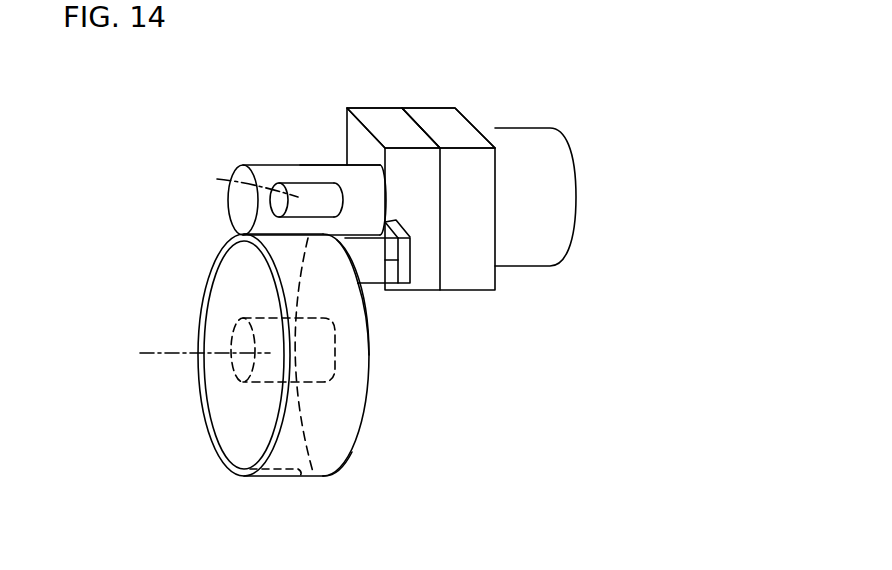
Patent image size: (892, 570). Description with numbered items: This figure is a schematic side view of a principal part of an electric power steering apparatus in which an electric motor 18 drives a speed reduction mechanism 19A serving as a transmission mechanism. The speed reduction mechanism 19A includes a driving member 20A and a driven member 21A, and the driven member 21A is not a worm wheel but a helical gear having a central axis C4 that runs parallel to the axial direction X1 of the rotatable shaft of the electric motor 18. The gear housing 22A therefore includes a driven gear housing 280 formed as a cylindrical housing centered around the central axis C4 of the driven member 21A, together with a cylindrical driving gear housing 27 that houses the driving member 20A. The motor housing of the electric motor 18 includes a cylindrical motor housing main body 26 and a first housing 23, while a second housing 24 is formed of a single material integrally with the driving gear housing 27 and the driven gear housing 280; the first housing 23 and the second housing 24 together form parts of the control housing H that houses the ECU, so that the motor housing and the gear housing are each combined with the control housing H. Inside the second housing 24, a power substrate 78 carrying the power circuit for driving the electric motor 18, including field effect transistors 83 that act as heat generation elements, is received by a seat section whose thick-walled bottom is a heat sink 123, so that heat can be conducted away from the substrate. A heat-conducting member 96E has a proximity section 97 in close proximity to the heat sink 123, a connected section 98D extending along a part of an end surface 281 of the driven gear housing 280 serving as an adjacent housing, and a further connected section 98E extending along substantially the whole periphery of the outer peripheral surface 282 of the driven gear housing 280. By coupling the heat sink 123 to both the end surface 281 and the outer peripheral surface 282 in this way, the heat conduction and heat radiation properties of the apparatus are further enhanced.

The electric motor 18 is at (582, 164).
The speed reduction mechanism 19A is at (298, 178).
The driving member 20A is at (231, 181).
The driven member 21A is at (233, 330).
The gear housing 22A is at (266, 163).
The first housing 23 is at (430, 120).
The second housing 24 is at (380, 120).
The motor housing main body 26 is at (518, 138).
The driving gear housing 27 is at (324, 168).
The power substrate 78 is at (408, 264).
The field effect transistors 83 is at (403, 222).
The heat-conducting member 96E is at (369, 290).
The proximity section 97 is at (373, 250).
The connected section 98D is at (362, 272).
The connected section 98E is at (333, 443).
The heat sink 123 is at (392, 270).
The driven gear housing 280 is at (235, 405).
The end surface 281 is at (335, 416).
The outer peripheral surface 282 is at (268, 478).
The central axis C4 is at (185, 370).
The control housing H is at (467, 42).
The axial direction X1 is at (680, 197).